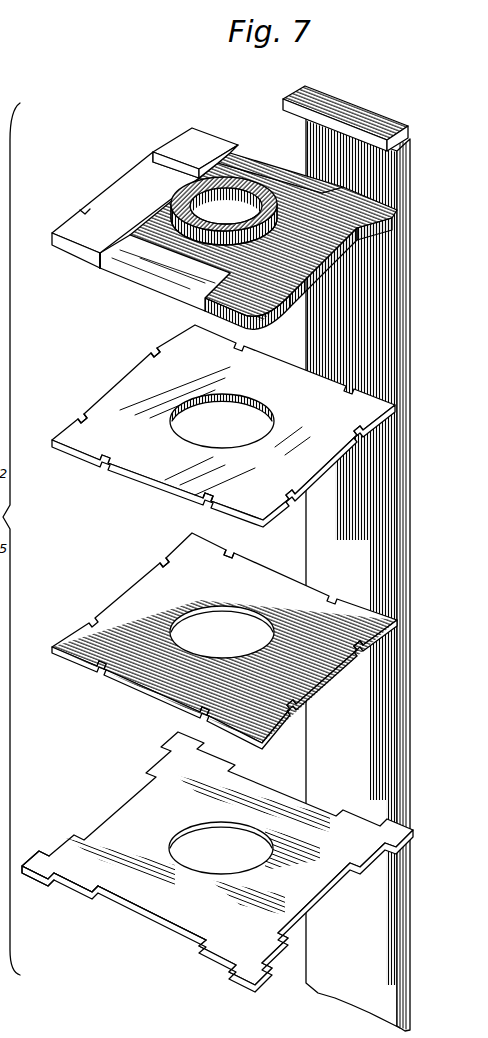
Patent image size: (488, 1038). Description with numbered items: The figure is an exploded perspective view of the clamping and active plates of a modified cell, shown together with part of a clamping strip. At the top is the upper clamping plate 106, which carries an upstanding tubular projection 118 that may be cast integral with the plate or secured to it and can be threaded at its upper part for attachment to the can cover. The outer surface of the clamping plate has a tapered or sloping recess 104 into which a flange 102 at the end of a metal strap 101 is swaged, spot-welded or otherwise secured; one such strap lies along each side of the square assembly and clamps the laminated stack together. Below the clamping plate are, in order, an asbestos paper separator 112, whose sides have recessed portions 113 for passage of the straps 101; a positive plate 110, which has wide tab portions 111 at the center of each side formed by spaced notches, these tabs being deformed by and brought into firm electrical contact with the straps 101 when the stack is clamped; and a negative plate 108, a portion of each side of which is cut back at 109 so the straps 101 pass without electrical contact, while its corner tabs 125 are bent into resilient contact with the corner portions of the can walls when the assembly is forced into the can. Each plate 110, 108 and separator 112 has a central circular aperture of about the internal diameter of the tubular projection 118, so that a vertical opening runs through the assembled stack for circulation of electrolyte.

The metal strap 101 is at (388, 184).
The flange 102 is at (328, 108).
The recess 104 is at (133, 182).
The upper clamping plate 106 is at (68, 223).
The negative plate 108 is at (145, 882).
The cut-back portion 109 is at (177, 927).
The positive plate 110 is at (103, 635).
The tab portion 111 is at (140, 578).
The asbestos paper separator 112 is at (80, 456).
The recessed portion 113 is at (122, 386).
The tubular projection 118 is at (193, 237).
The corner tab 125 is at (40, 881).